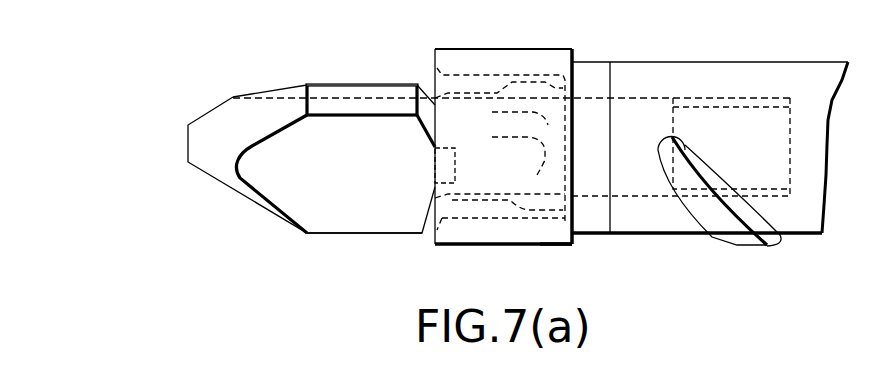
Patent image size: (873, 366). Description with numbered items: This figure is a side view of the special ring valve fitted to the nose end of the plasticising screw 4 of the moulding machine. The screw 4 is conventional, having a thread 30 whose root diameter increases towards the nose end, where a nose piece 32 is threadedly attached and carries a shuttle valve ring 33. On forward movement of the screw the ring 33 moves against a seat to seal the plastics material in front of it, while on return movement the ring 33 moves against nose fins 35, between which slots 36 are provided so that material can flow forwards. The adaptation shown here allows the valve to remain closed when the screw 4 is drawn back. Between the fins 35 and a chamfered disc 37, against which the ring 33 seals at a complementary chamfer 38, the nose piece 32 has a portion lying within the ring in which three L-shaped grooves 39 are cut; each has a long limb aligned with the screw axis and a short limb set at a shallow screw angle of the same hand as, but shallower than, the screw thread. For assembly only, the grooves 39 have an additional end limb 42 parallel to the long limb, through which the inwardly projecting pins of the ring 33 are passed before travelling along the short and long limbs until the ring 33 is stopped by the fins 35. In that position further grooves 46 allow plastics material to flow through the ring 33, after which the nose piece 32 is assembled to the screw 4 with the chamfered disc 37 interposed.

The plasticising screw 4 is at (768, 70).
The thread 30 is at (733, 240).
The nose piece 32 is at (160, 150).
The shuttle valve ring 33 is at (468, 52).
The nose fins 35 is at (337, 230).
The slots 36 is at (298, 187).
The chamfered disc 37 is at (590, 229).
The complementary chamfer 38 is at (567, 227).
The L-shaped grooves 39 is at (508, 172).
The end limb 42 is at (548, 128).
The further grooves 46 is at (513, 92).